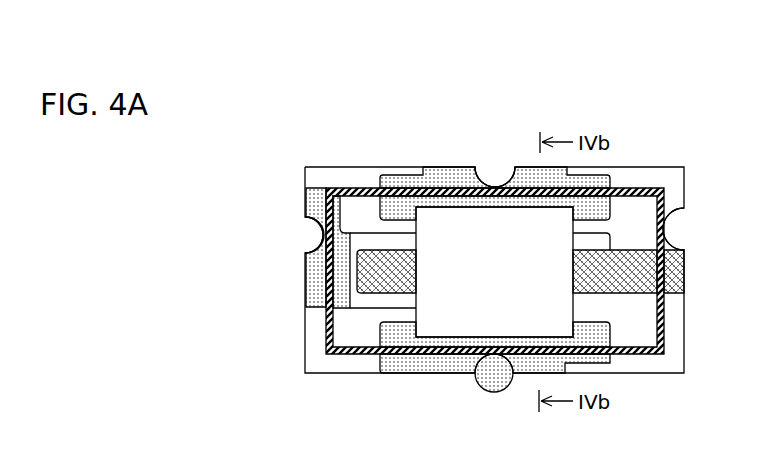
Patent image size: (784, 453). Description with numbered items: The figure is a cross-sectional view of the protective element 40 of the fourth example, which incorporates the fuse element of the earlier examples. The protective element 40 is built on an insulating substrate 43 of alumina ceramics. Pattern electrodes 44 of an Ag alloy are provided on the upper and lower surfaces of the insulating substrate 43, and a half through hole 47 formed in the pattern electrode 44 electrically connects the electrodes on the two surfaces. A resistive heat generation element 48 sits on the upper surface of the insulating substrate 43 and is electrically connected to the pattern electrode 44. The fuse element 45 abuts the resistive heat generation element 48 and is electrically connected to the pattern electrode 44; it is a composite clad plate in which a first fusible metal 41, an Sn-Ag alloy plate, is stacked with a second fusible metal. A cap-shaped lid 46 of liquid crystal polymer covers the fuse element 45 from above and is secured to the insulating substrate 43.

The protective element 40 is at (289, 160).
The first fusible metal 41 is at (552, 227).
The insulating substrate 43 is at (667, 178).
The pattern electrode 44 is at (450, 167).
The fuse element 45 is at (508, 279).
The cap-shaped lid 46 is at (352, 167).
The half through hole 47 is at (508, 180).
The resistive heat generation element 48 is at (375, 302).